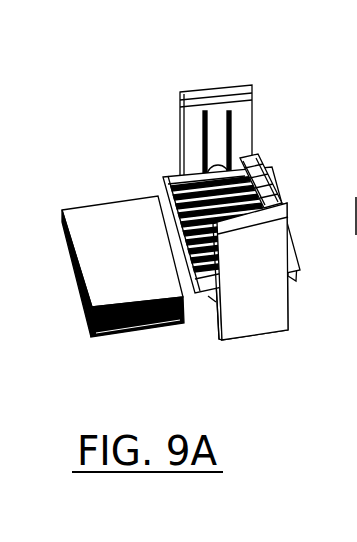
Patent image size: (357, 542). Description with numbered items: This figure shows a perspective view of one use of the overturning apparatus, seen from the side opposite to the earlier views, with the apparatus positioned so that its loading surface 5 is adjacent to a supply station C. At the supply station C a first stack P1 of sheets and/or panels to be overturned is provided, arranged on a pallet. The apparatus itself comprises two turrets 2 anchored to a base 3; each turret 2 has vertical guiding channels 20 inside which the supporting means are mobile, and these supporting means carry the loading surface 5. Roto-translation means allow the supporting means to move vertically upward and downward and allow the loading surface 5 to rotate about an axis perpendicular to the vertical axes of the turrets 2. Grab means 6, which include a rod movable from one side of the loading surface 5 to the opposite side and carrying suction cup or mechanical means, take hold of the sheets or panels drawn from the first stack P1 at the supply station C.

The turret 2 is at (245, 108).
The vertical guiding channel 20 is at (205, 115).
The loading surface 5 is at (172, 178).
The grab means 6 is at (270, 173).
The base 3 is at (212, 300).
The first stack P1 is at (80, 195).
The supply station C is at (99, 162).